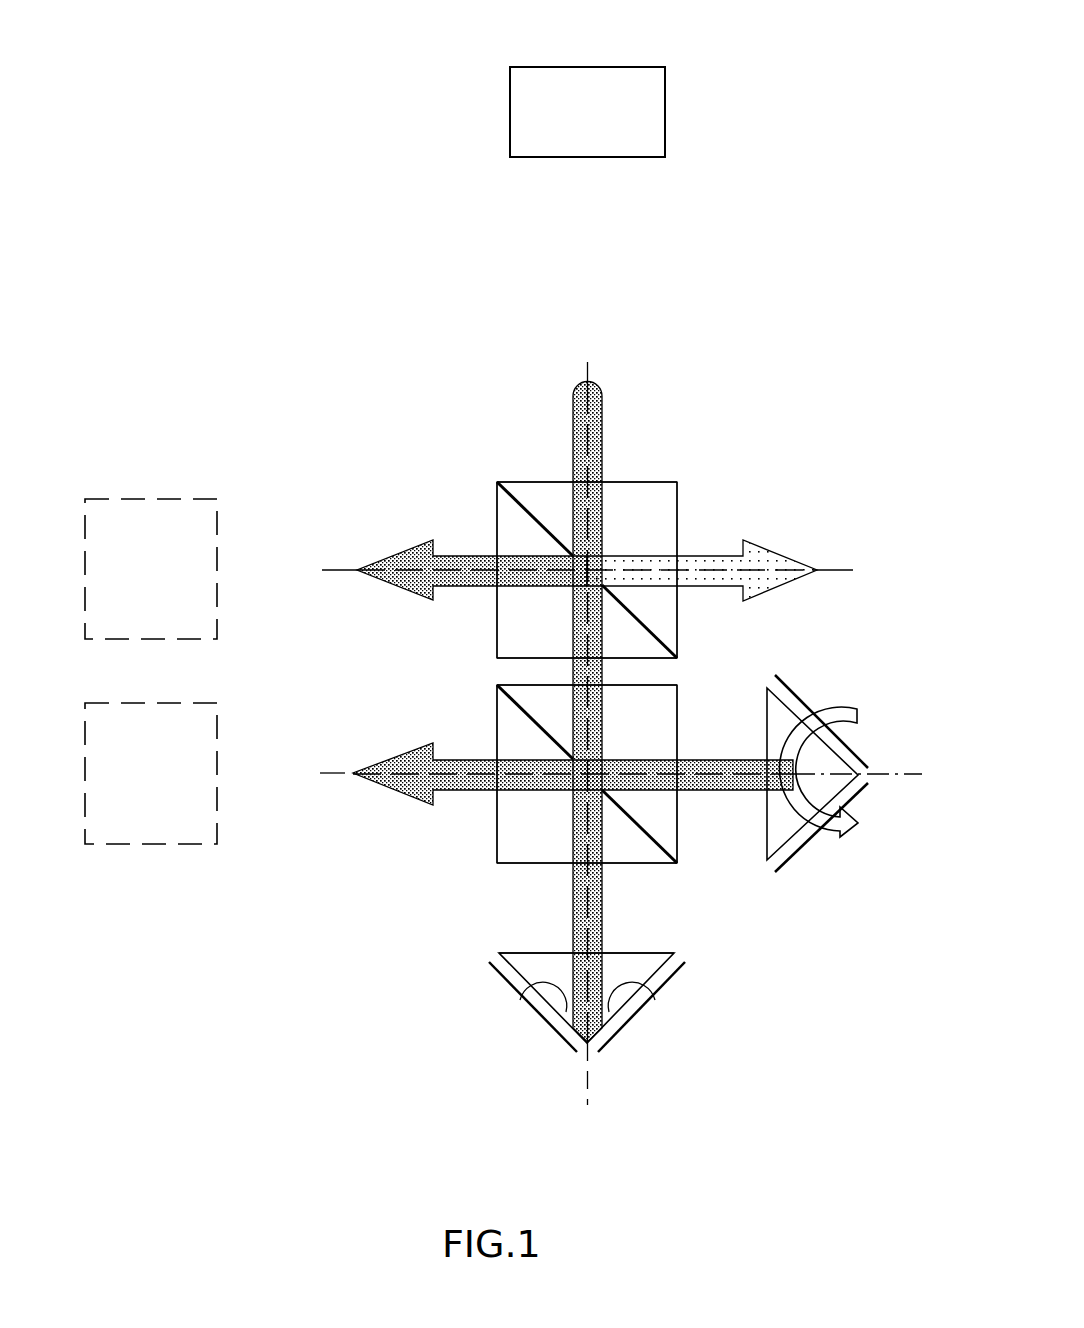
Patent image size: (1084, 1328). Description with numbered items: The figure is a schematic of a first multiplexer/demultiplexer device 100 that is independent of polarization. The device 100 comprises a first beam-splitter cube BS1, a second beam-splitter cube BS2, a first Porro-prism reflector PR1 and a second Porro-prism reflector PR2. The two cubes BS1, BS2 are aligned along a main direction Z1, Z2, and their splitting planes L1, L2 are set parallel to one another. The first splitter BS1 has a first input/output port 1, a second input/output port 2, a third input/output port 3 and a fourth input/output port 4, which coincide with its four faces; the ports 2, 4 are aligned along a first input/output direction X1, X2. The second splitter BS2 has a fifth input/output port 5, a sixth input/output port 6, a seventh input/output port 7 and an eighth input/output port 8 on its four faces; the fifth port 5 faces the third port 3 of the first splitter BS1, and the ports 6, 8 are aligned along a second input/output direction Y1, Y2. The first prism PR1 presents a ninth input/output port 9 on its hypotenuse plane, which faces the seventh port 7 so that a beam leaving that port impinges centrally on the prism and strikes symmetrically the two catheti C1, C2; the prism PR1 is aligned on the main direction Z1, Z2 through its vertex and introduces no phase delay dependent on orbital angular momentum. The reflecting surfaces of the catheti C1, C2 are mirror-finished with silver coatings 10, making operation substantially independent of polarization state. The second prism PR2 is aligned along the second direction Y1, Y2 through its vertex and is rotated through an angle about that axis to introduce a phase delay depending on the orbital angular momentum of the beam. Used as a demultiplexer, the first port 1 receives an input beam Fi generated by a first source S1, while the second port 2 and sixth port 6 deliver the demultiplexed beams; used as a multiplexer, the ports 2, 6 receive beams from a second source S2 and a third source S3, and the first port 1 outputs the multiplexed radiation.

The first source S1 is at (640, 67).
The second source S2 is at (130, 499).
The third source S3 is at (130, 845).
The input beam Fi is at (580, 261).
The main direction (first end) Z1 is at (589, 358).
The main direction (second end) Z2 is at (589, 1092).
The first input/output direction (first end) X1 is at (326, 573).
The first input/output direction (second end) X2 is at (851, 573).
The second input/output direction (first end) Y1 is at (319, 776).
The second input/output direction (second end) Y2 is at (859, 791).
The first beam-splitter cube BS1 is at (495, 500).
The second beam-splitter cube BS2 is at (518, 868).
The splitting plane of first splitter L1 is at (533, 515).
The splitting plane of second splitter L2 is at (519, 708).
The first input/output port 1 is at (628, 482).
The second input/output port 2 is at (497, 528).
The third input/output port 3 is at (648, 658).
The fourth input/output port 4 is at (678, 510).
The fifth input/output port 5 is at (517, 685).
The sixth input/output port 6 is at (497, 813).
The seventh input/output port 7 is at (633, 865).
The eighth input/output port 8 is at (677, 813).
The ninth input/output port 9 is at (530, 950).
The silver coatings 10 is at (807, 704).
The first Porro-prism reflector PR1 is at (648, 944).
The second Porro-prism reflector PR2 is at (758, 710).
The first cathetus C1 is at (612, 1010).
The second cathetus C2 is at (520, 1000).
The first multiplexer/demultiplexer device 100 is at (362, 1140).